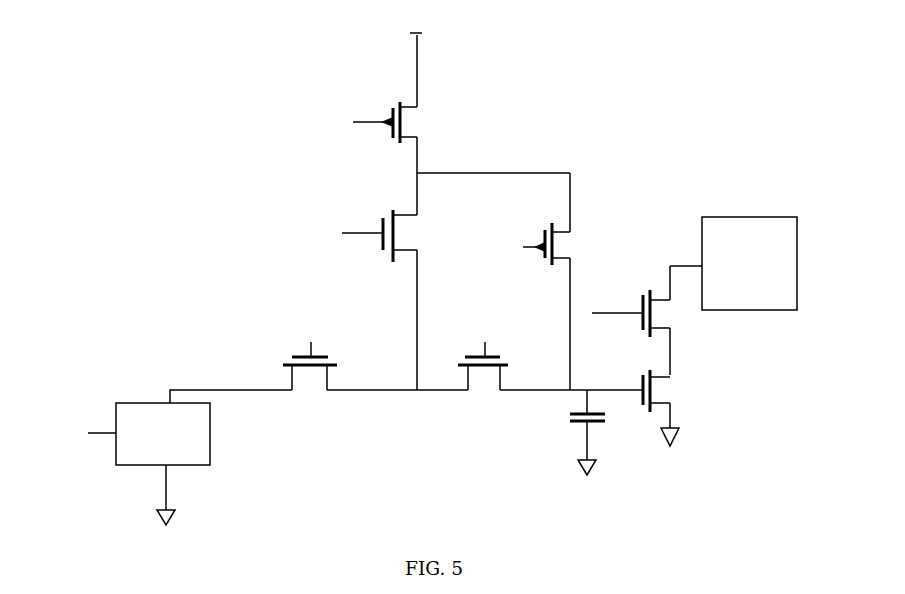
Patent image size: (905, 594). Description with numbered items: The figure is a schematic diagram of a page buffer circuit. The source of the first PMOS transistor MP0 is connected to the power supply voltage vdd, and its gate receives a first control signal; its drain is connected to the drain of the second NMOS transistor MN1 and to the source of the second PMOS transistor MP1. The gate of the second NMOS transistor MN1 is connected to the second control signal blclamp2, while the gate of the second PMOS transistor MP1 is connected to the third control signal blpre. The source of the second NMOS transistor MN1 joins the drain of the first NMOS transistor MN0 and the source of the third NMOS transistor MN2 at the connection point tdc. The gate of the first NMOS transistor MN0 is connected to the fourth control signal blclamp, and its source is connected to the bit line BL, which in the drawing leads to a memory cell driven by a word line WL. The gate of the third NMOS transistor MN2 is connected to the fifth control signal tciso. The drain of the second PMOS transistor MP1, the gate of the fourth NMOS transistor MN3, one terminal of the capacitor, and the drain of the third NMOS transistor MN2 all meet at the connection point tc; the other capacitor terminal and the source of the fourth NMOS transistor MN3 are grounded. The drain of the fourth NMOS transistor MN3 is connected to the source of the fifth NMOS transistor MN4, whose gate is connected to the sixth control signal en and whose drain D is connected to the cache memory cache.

The power supply voltage vdd is at (409, 58).
The first PMOS transistor MP0 is at (432, 122).
The second NMOS transistor MN1 is at (421, 236).
The second control signal blclamp2 is at (327, 213).
The second PMOS transistor MP1 is at (584, 244).
The third control signal blpre is at (508, 225).
The cache memory cache is at (749, 263).
The drain D is at (686, 271).
The fifth NMOS transistor MN4 is at (686, 315).
The sixth control signal en is at (615, 300).
The fourth NMOS transistor MN3 is at (695, 391).
The connection point tc is at (571, 420).
The connection point tdc is at (397, 374).
The third NMOS transistor MN2 is at (480, 390).
The fifth control signal tciso is at (478, 336).
The first NMOS transistor MN0 is at (310, 390).
The fourth control signal blclamp is at (315, 337).
The bit line BL is at (231, 379).
The memory cell is at (163, 464).
The word line WL is at (92, 421).